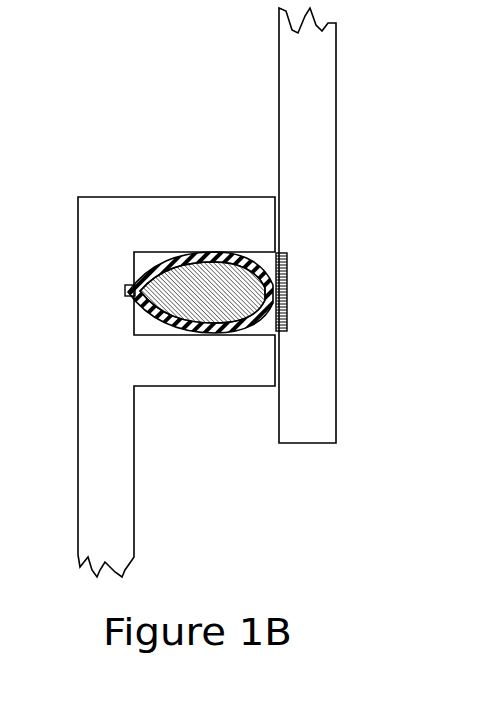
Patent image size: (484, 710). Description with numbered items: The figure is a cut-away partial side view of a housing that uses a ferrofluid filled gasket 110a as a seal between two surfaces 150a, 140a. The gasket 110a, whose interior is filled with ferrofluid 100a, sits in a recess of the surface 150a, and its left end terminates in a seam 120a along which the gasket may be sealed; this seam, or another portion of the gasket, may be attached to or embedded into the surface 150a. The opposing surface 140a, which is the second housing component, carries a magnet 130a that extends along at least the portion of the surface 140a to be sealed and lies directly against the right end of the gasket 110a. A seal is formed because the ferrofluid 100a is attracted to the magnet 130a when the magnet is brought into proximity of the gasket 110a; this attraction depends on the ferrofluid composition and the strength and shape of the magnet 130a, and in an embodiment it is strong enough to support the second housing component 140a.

The ferrofluid 100a is at (216, 275).
The ferrofluid filled gasket 110a is at (168, 257).
The seam 120a is at (126, 293).
The magnet 130a is at (293, 290).
The surface 140a is at (300, 161).
The surface 150a is at (108, 265).